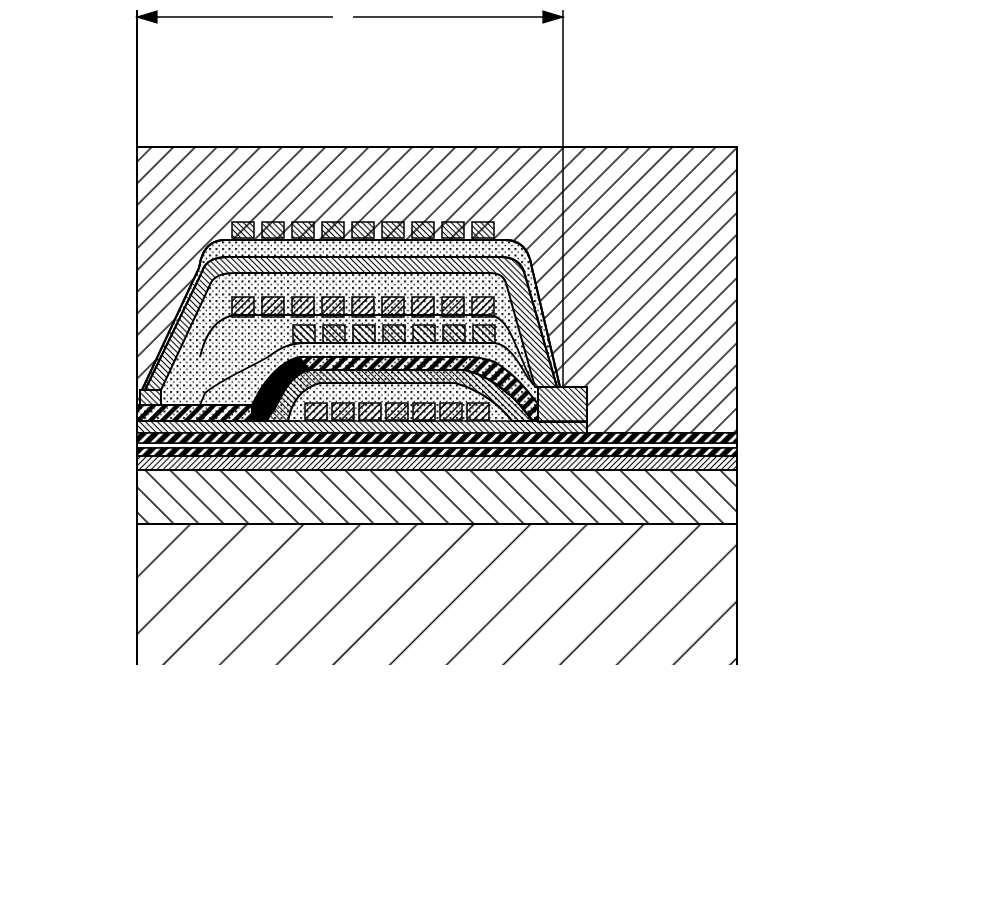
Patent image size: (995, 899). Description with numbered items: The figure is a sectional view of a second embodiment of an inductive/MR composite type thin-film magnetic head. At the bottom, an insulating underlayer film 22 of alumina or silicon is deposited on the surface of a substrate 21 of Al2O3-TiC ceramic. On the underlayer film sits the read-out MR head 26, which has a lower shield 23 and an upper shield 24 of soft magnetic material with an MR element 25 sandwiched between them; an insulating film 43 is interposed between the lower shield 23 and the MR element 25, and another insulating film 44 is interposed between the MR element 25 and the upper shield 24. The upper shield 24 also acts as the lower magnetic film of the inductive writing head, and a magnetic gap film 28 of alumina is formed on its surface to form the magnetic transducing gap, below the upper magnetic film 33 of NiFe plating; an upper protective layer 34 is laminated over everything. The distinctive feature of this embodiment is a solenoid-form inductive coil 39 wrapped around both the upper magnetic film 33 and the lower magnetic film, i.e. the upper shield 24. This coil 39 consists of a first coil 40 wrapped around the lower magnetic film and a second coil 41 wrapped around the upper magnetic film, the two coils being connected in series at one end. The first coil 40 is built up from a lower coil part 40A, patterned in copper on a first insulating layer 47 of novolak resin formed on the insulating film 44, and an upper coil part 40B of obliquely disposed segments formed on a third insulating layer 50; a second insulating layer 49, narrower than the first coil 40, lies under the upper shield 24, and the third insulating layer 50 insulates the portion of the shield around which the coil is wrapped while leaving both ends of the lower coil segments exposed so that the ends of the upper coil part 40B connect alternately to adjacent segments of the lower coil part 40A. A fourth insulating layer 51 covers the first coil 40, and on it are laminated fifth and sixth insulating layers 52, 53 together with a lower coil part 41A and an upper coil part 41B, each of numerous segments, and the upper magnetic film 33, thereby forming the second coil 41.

The substrate 21 is at (137, 633).
The insulating underlayer film 22 is at (137, 522).
The lower shield 23 is at (137, 468).
The upper shield 24 is at (137, 432).
The MR element 25 is at (137, 454).
The MR head 26 is at (58, 425).
The magnetic gap film 28 is at (137, 410).
The upper magnetic film 33 is at (212, 333).
The upper protective layer 34 is at (137, 207).
The solenoid-form inductive coil 39 is at (457, 240).
The first coil 40 is at (815, 252).
The lower coil part 40A is at (587, 388).
The upper coil part 40B is at (446, 337).
The second coil 41 is at (373, 98).
The lower coil part 41A is at (394, 296).
The upper coil part 41B is at (358, 221).
The insulating film 43 is at (737, 460).
The insulating film 44 is at (737, 436).
The first insulating layer 47 is at (418, 433).
The second insulating layer 49 is at (285, 433).
The third insulating layer 50 is at (150, 393).
The fourth insulating layer 51 is at (190, 365).
The fifth insulating layer 52 is at (200, 278).
The sixth insulating layer 53 is at (520, 245).